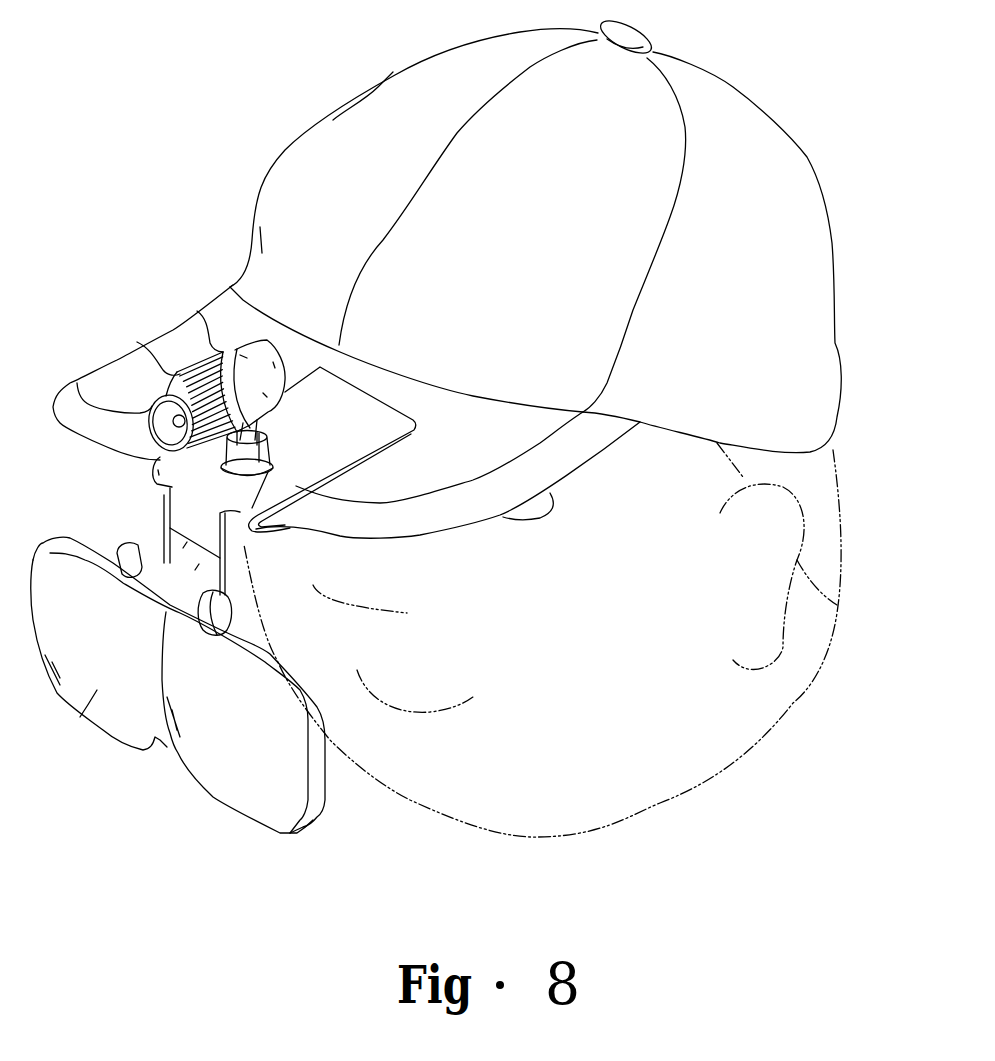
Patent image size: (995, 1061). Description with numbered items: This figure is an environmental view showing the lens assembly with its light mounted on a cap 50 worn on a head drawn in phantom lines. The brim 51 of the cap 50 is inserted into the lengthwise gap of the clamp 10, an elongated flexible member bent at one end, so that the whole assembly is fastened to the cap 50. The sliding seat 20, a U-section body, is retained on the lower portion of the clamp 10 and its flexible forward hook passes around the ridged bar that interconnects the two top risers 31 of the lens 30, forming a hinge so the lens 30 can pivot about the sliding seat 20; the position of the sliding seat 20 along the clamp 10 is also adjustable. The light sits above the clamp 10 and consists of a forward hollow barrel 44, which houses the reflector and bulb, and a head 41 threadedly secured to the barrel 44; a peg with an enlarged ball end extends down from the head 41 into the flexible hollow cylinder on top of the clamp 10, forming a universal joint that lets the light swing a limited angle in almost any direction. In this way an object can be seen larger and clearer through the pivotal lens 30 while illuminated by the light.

The clamp 10 is at (180, 521).
The sliding seat 20 is at (332, 537).
The lens 30 is at (80, 718).
The top risers 31 is at (223, 613).
The head 41 is at (197, 311).
The forward hollow barrel 44 is at (137, 342).
The cap 50 is at (827, 397).
The brim 51 is at (463, 520).